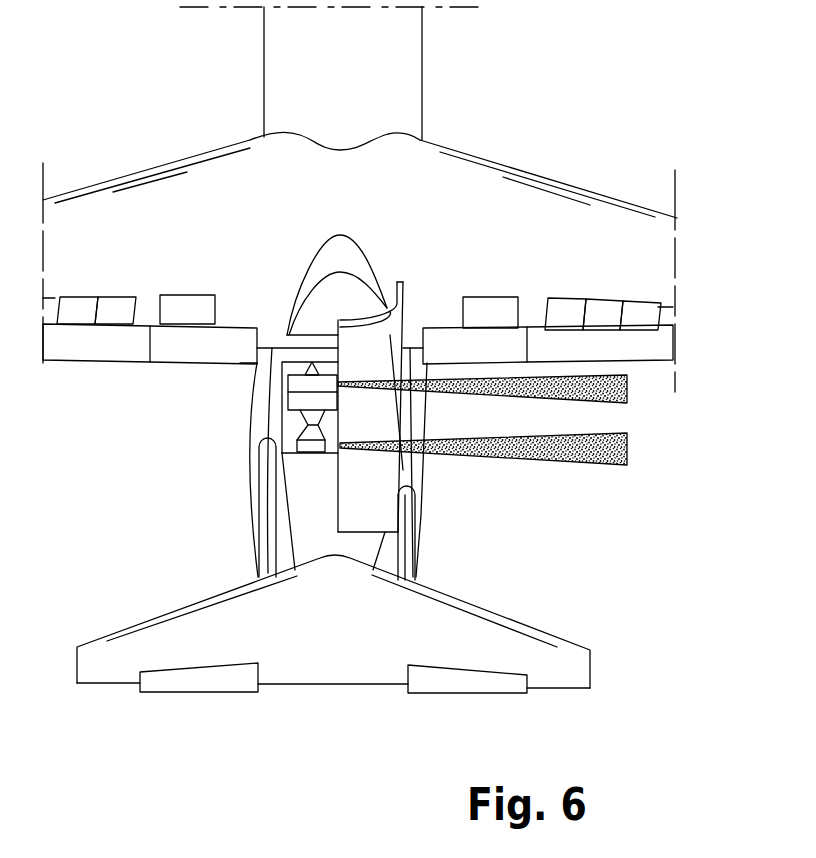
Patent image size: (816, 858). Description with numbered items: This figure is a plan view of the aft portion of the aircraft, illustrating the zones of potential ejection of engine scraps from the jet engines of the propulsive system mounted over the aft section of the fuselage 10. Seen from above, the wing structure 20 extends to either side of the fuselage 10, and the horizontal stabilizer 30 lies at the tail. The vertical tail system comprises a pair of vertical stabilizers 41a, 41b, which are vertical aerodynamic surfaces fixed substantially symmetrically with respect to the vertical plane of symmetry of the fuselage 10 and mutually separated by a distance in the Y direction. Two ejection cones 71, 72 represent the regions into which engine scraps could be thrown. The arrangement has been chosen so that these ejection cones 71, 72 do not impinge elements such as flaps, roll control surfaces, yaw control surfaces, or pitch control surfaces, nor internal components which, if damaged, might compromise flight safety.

The fuselage 10 is at (421, 56).
The wing structure 20 is at (557, 162).
The horizontal stabilizer 30 is at (198, 643).
The vertical stabilizer 41a is at (407, 518).
The vertical stabilizer 41b is at (258, 485).
The ejection cone 71 is at (627, 387).
The ejection cone 72 is at (563, 465).